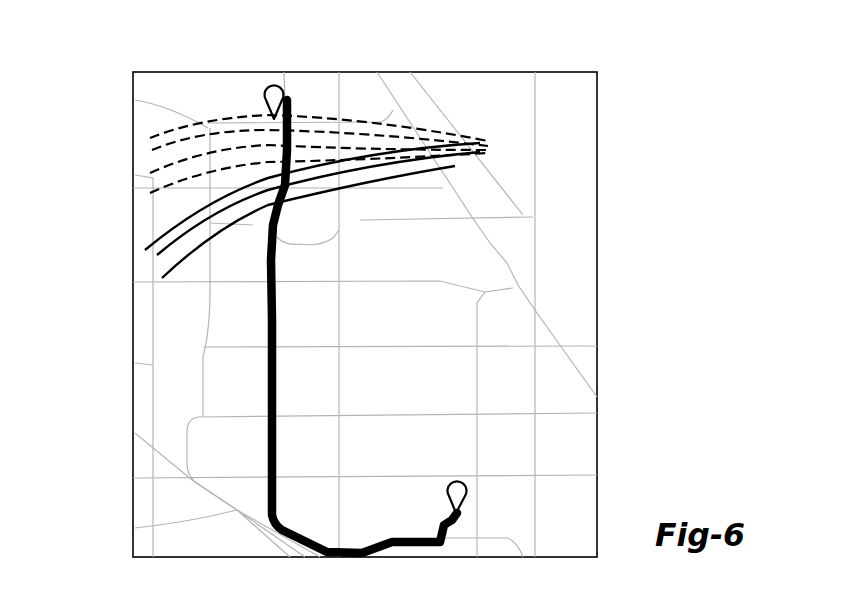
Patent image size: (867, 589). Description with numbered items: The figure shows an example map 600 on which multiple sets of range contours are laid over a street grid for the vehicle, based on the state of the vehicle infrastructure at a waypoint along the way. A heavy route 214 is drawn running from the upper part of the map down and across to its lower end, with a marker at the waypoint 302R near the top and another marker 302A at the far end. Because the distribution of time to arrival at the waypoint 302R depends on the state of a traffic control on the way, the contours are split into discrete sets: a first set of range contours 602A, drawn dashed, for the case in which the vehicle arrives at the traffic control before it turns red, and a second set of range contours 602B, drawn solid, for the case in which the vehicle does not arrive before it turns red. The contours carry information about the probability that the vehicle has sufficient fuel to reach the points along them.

The map 600 is at (129, 57).
The first set of range contours 602A is at (127, 152).
The second set of range contours 602B is at (127, 228).
The selected route 214 is at (277, 385).
The waypoint 302R is at (265, 97).
The destination pin 302A is at (447, 493).